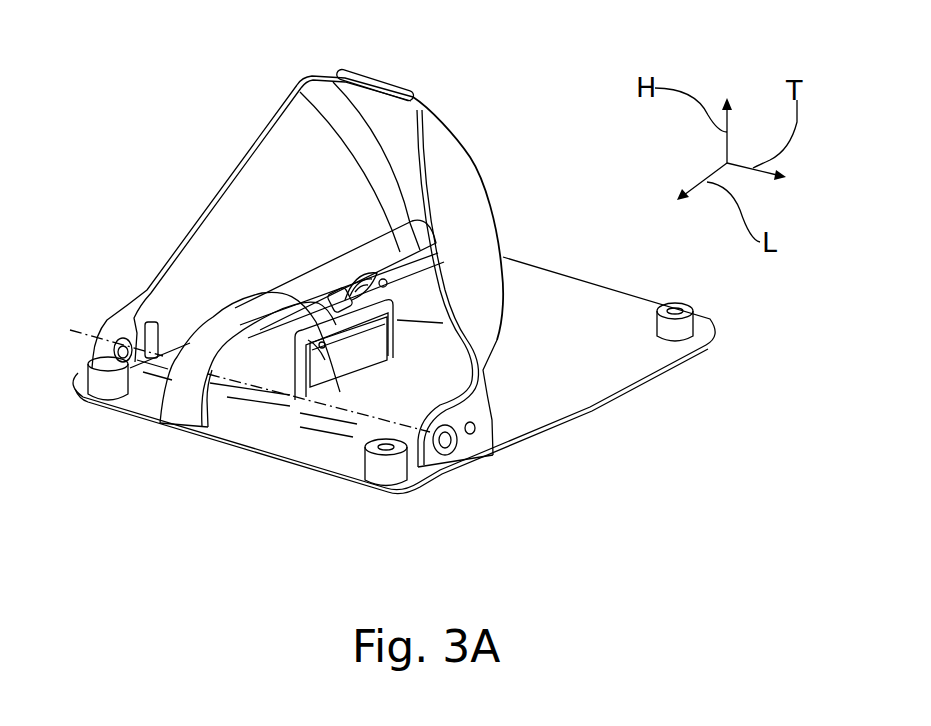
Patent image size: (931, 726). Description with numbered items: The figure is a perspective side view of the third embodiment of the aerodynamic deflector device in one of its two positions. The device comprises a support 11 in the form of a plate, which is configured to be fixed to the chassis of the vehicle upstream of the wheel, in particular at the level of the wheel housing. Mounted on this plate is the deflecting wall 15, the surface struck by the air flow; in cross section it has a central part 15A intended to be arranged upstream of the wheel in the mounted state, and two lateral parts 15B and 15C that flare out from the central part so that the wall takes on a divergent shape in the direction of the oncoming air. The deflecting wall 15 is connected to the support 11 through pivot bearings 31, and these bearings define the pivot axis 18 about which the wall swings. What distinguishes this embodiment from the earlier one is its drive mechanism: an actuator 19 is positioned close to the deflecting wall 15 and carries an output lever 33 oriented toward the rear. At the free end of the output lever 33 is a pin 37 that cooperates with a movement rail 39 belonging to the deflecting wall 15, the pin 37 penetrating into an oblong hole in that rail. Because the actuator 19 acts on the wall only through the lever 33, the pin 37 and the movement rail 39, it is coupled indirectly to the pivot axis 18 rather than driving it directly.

The support 11 is at (617, 368).
The deflecting wall 15 is at (342, 236).
The central part 15A is at (452, 133).
The lateral part 15B is at (468, 203).
The lateral part 15C is at (193, 233).
The pivot axis 18 is at (365, 412).
The actuator 19 is at (407, 272).
The pivot bearing 31 is at (122, 334).
The output lever 33 is at (383, 280).
The pin 37 is at (312, 326).
The movement rail 39 is at (307, 373).